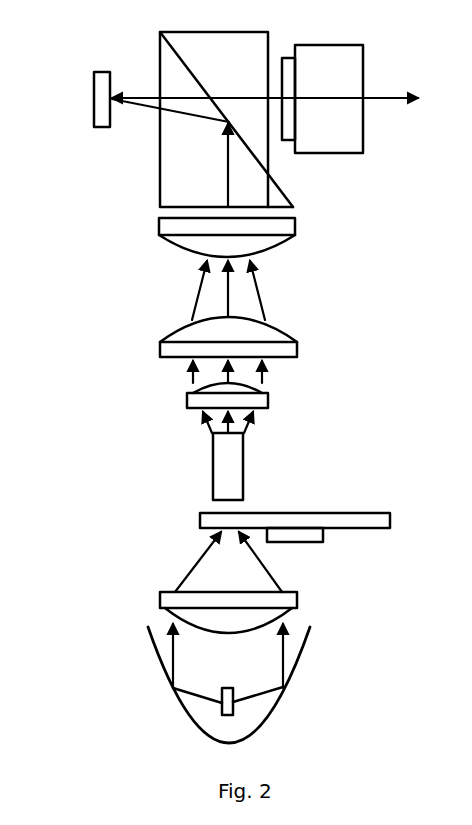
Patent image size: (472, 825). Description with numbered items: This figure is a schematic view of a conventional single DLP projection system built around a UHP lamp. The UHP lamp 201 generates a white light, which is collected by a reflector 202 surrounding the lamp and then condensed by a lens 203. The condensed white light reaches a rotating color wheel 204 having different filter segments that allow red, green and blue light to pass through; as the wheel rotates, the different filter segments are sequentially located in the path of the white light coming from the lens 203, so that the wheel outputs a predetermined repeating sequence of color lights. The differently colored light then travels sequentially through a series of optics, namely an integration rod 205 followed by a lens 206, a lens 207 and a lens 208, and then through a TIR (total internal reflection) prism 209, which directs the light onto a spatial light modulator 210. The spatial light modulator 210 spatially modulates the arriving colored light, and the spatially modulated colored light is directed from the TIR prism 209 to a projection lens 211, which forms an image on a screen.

The UHP lamp 201 is at (218, 715).
The reflector 202 is at (152, 655).
The lens 203 is at (160, 605).
The rotating color wheel 204 is at (335, 512).
The integration rod 205 is at (243, 460).
The lens 206 is at (268, 400).
The lens 207 is at (297, 343).
The lens 208 is at (300, 230).
The TIR prism 209 is at (170, 168).
The spatial light modulator 210 is at (92, 108).
The projection lens 211 is at (335, 45).